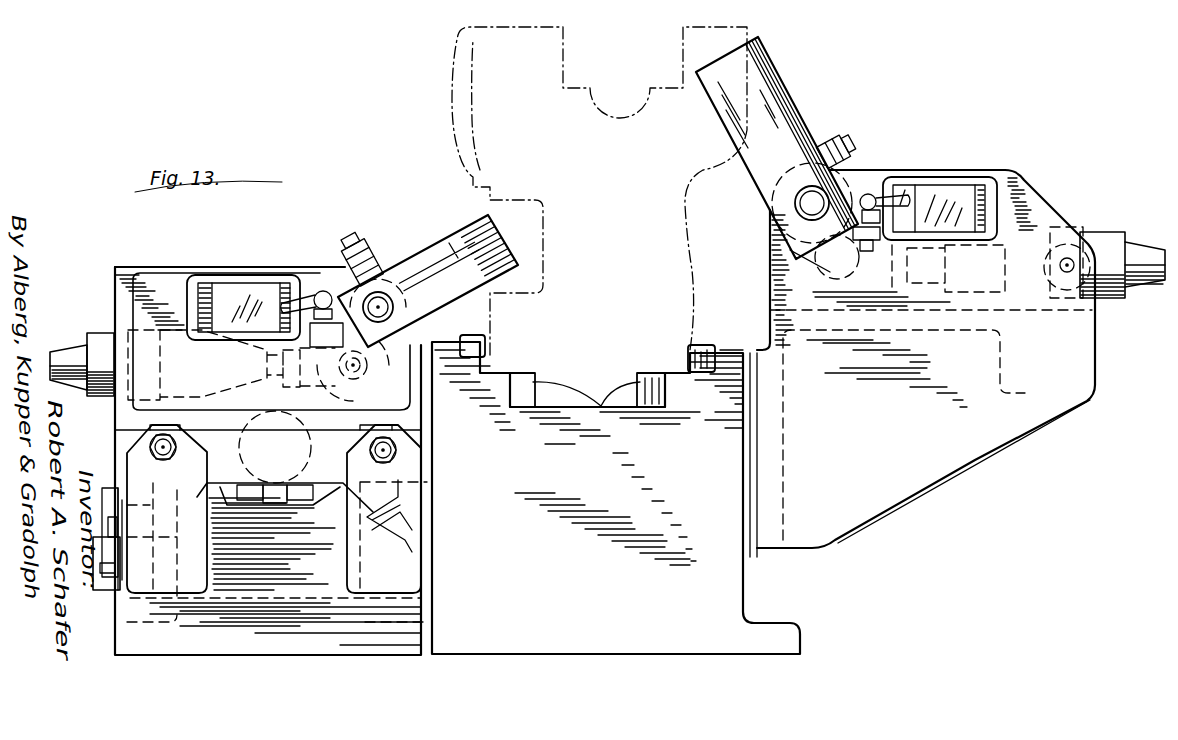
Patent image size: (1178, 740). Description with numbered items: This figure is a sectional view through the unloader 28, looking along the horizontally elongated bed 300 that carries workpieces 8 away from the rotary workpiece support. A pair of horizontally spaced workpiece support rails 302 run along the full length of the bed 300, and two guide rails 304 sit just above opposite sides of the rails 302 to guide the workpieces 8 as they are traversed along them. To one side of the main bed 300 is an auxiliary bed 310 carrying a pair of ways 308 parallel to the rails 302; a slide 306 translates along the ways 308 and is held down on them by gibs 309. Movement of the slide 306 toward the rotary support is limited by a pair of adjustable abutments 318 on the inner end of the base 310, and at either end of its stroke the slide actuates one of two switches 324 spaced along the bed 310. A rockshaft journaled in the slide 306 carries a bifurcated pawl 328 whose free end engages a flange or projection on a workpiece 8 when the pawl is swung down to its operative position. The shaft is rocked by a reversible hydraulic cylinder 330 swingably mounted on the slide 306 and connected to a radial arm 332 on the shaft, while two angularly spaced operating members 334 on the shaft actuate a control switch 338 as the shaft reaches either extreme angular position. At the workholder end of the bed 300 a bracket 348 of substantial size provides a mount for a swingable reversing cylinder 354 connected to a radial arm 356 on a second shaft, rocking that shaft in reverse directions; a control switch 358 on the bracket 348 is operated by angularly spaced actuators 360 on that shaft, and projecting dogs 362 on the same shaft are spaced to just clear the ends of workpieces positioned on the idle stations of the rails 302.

The workpiece 8 is at (632, 242).
The unloader 28 is at (804, 577).
The bed 300 is at (627, 618).
The workpiece support rails 302 is at (602, 398).
The guide rails 304 is at (488, 348).
The slide 306 is at (142, 267).
The ways 308 is at (162, 484).
The gibs 309 is at (423, 520).
The auxiliary bed 310 is at (313, 640).
The adjustable abutments 318 is at (150, 448).
The switches 324 is at (110, 584).
The bifurcated pawl 328 is at (428, 258).
The reversible hydraulic cylinder 330 is at (100, 334).
The radial arm 332 is at (364, 375).
The operating members 334 is at (348, 260).
The control switch 338 is at (276, 292).
The bracket 348 is at (1000, 426).
The swingable reversing cylinder 354 is at (1122, 218).
The radial arm 356 is at (790, 268).
The control switch 358 is at (947, 186).
The actuators 360 is at (848, 150).
The projecting dogs 362 is at (782, 108).